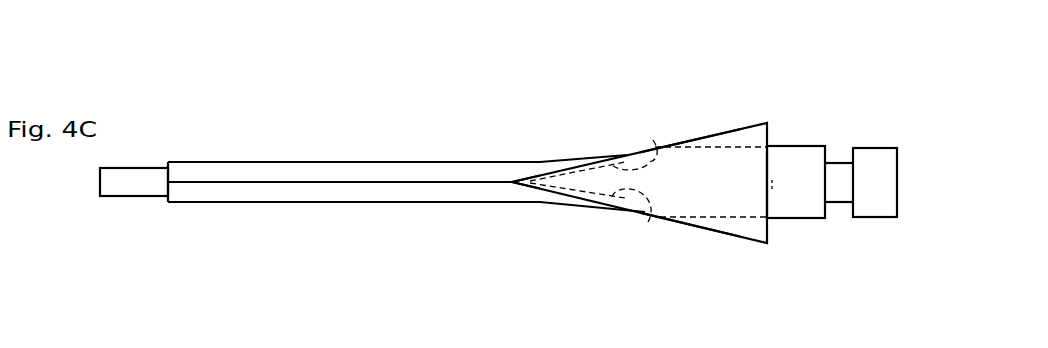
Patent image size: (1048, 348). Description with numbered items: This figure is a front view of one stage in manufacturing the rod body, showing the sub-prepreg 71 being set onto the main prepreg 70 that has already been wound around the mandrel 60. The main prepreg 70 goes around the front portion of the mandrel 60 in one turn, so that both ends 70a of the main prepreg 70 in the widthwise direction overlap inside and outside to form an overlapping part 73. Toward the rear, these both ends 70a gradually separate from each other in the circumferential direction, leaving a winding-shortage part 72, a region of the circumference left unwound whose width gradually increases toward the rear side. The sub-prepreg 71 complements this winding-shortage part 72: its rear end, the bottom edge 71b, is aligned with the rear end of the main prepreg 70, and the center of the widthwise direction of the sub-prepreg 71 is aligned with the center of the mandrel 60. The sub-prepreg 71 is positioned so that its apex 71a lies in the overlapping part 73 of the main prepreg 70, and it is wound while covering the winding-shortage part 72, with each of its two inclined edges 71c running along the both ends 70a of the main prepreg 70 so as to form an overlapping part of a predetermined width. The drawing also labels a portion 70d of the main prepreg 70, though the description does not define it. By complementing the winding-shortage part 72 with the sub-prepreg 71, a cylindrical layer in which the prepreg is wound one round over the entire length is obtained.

The mandrel 60 is at (898, 181).
The main prepreg 70 is at (201, 162).
The both ends of the main prepreg in the widthwise direction 70a is at (653, 140).
The tube distal portion 70d is at (665, 7).
The sub-prepreg 71 is at (736, 128).
The apex 71a is at (511, 180).
The bottom edge 71b is at (773, 133).
The inclined edges 71c is at (690, 140).
The winding-shortage part 72 is at (755, 187).
The overlapping part 73 is at (310, 182).